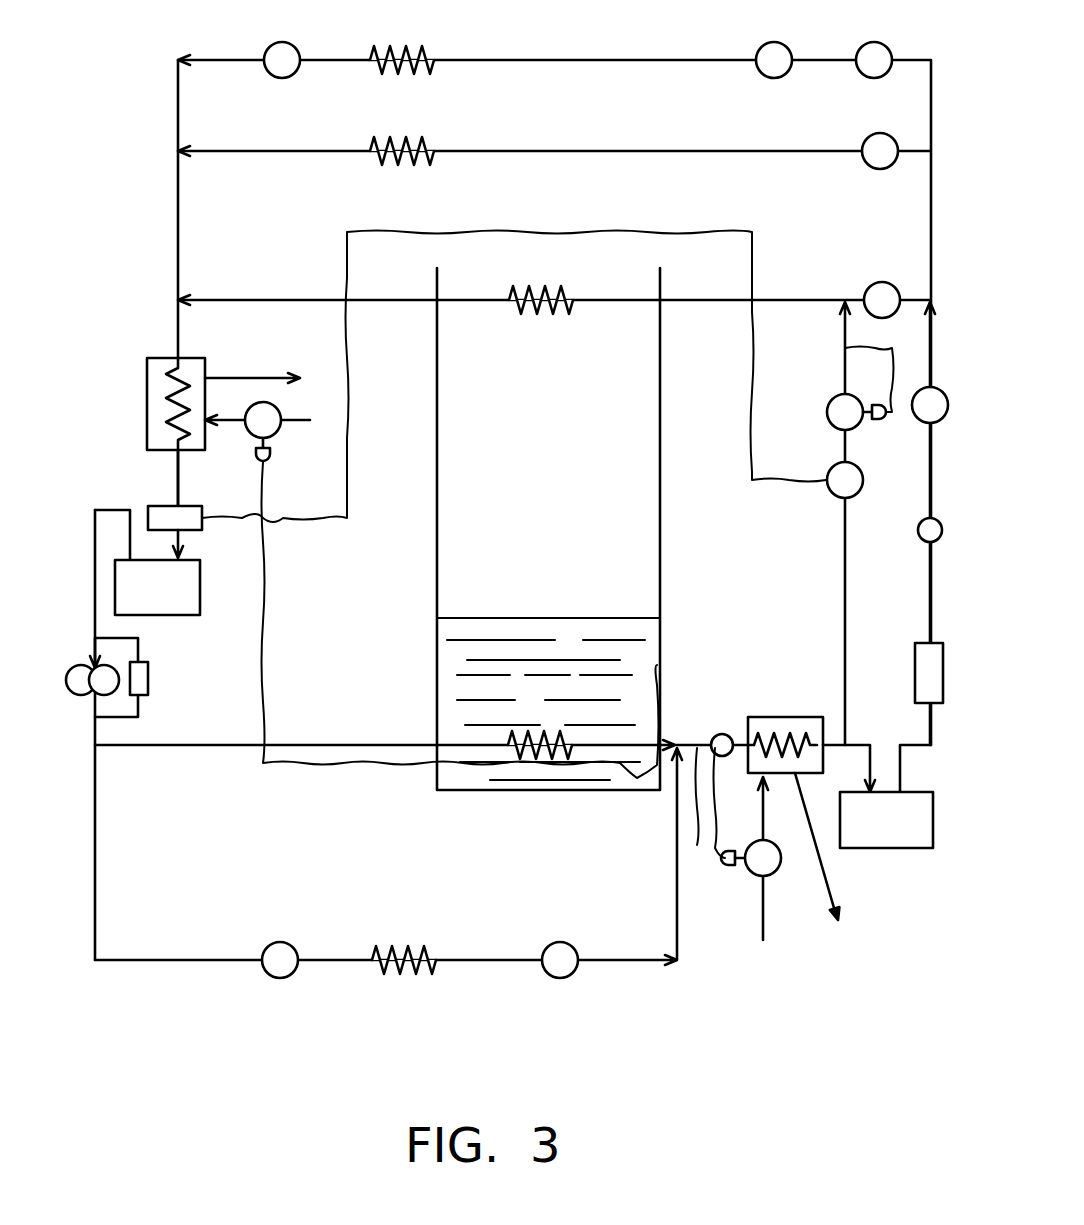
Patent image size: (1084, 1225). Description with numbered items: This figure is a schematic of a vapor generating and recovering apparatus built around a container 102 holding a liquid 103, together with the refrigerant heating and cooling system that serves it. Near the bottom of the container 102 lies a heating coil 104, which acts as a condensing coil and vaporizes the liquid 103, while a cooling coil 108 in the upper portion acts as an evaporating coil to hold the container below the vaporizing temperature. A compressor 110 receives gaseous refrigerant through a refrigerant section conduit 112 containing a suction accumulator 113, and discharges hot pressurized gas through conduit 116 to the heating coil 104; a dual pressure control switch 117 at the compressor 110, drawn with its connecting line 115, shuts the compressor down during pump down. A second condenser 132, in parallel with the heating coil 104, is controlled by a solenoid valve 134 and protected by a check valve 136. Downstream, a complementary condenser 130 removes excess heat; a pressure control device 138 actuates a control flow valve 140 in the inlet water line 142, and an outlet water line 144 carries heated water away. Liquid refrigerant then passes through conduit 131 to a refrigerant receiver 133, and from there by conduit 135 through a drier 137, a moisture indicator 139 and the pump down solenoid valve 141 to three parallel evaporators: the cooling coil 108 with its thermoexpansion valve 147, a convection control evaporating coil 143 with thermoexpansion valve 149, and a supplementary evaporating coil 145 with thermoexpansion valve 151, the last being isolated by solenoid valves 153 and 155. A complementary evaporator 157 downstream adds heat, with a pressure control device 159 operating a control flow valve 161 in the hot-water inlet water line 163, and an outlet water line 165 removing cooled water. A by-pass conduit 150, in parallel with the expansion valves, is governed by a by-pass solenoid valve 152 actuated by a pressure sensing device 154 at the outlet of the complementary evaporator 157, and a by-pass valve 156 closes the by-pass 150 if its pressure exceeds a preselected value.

The container 102 is at (660, 507).
The liquid 103 is at (633, 665).
The heating coil 104 is at (532, 760).
The cooling coil 108 is at (517, 312).
The compressor 110 is at (76, 694).
The refrigerant section conduit 112 is at (95, 545).
The suction accumulator 113 is at (195, 605).
The line 115 is at (118, 637).
The conduit 116 is at (222, 744).
The dual pressure control switch 117 is at (148, 680).
The complementary condenser 130 is at (812, 717).
The conduit 131 is at (848, 744).
The condenser 132 is at (378, 975).
The refrigerant receiver 133 is at (933, 826).
The solenoid valve 134 is at (268, 978).
The conduit 135 is at (923, 744).
The check valve 136 is at (545, 975).
The drier 137 is at (915, 645).
The pressure control device 138 is at (719, 733).
The moisture indicator 139 is at (919, 537).
The control flow valve 140 is at (736, 870).
The pump down solenoid valve 141 is at (975, 368).
The inlet water line 142 is at (765, 808).
The evaporating coil 143 is at (408, 138).
The outlet water line 144 is at (833, 881).
The evaporating coil 145 is at (410, 48).
The thermoexpansion valve 147 is at (882, 282).
The thermoexpansion valve 149 is at (879, 134).
The by-pass conduit 150 is at (845, 585).
The thermoexpansion valve 151 is at (773, 44).
The by-pass solenoid valve 152 is at (830, 495).
The solenoid valve 153 is at (875, 42).
The pressure sensing device 154 is at (185, 530).
The solenoid valve 155 is at (290, 42).
The by-pass valve 156 is at (869, 423).
The complementary evaporator 157 is at (147, 385).
The pressure control device 159 is at (719, 734).
The control flow valve 161 is at (272, 452).
The inlet water line 163 is at (230, 420).
The outlet water line 165 is at (222, 378).